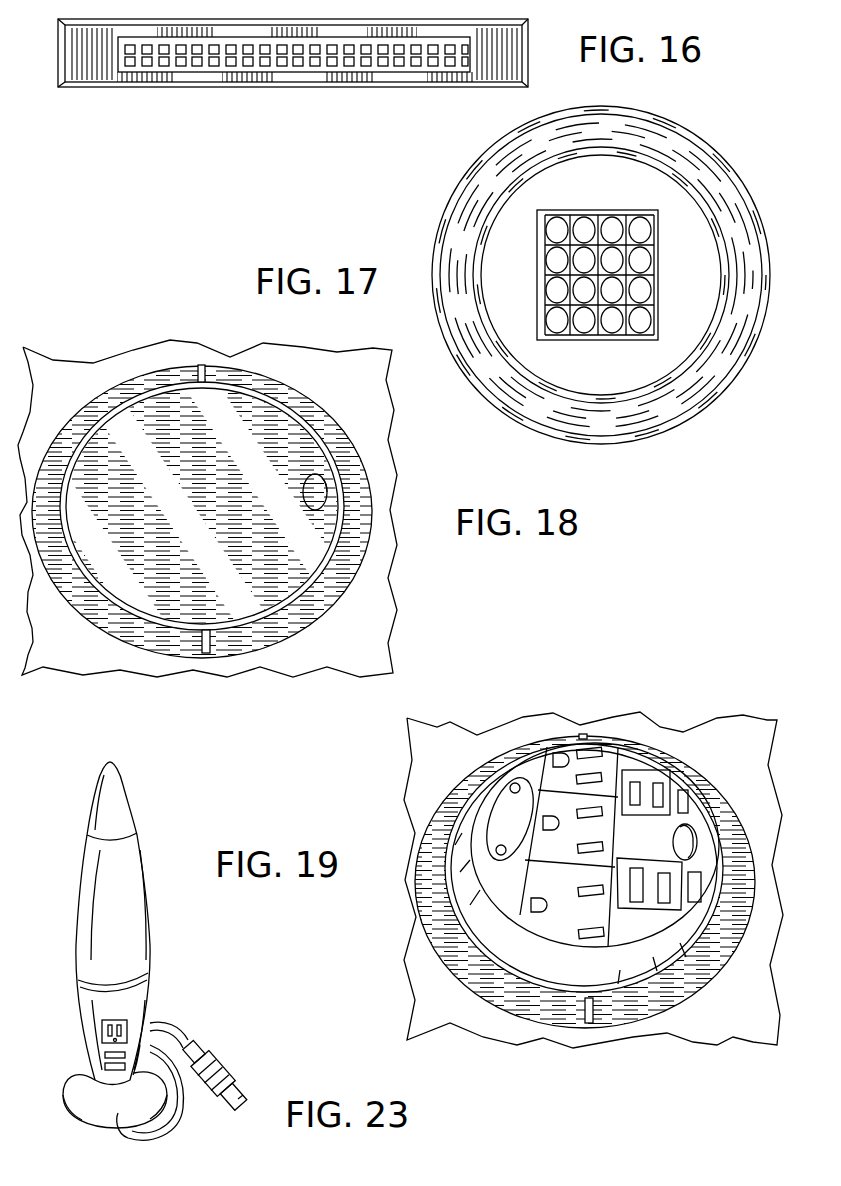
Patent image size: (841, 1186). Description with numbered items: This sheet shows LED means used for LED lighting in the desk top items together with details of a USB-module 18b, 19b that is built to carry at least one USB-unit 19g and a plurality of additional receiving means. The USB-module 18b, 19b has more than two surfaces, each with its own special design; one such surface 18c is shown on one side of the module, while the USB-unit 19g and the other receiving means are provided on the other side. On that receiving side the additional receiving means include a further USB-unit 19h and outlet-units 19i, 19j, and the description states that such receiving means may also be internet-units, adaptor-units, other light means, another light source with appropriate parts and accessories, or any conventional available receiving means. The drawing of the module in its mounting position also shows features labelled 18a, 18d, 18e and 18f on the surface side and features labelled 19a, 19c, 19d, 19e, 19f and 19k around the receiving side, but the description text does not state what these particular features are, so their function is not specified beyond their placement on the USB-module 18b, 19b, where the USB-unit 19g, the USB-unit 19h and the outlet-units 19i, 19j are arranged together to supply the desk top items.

In FIG. 18, the mounting surface 18a is at (320, 375).
In FIG. 18, the USB-module 18b is at (87, 593).
In FIG. 18, the surface 18c is at (273, 578).
In FIG. 18, the hole 18d is at (325, 492).
In FIG. 18, the lower tab 18e is at (205, 638).
In FIG. 18, the upper tab 18f is at (200, 372).
In FIG. 19, the mounting surface 19a is at (428, 998).
In FIG. 19, the USB-module 19b is at (657, 752).
In FIG. 19, the lower tab 19c is at (588, 1010).
In FIG. 19, the upper tab 19d is at (583, 735).
In FIG. 19, the hole 19e is at (687, 850).
In FIG. 19, the oval recess 19f is at (457, 823).
In FIG. 19, the USB-unit 19g is at (650, 897).
In FIG. 19, the USB-unit 19h is at (657, 793).
In FIG. 19, the outlet-unit 19i is at (530, 883).
In FIG. 19, the outlet-unit 19j is at (543, 803).
In FIG. 19, the inner ring 19k is at (480, 928).